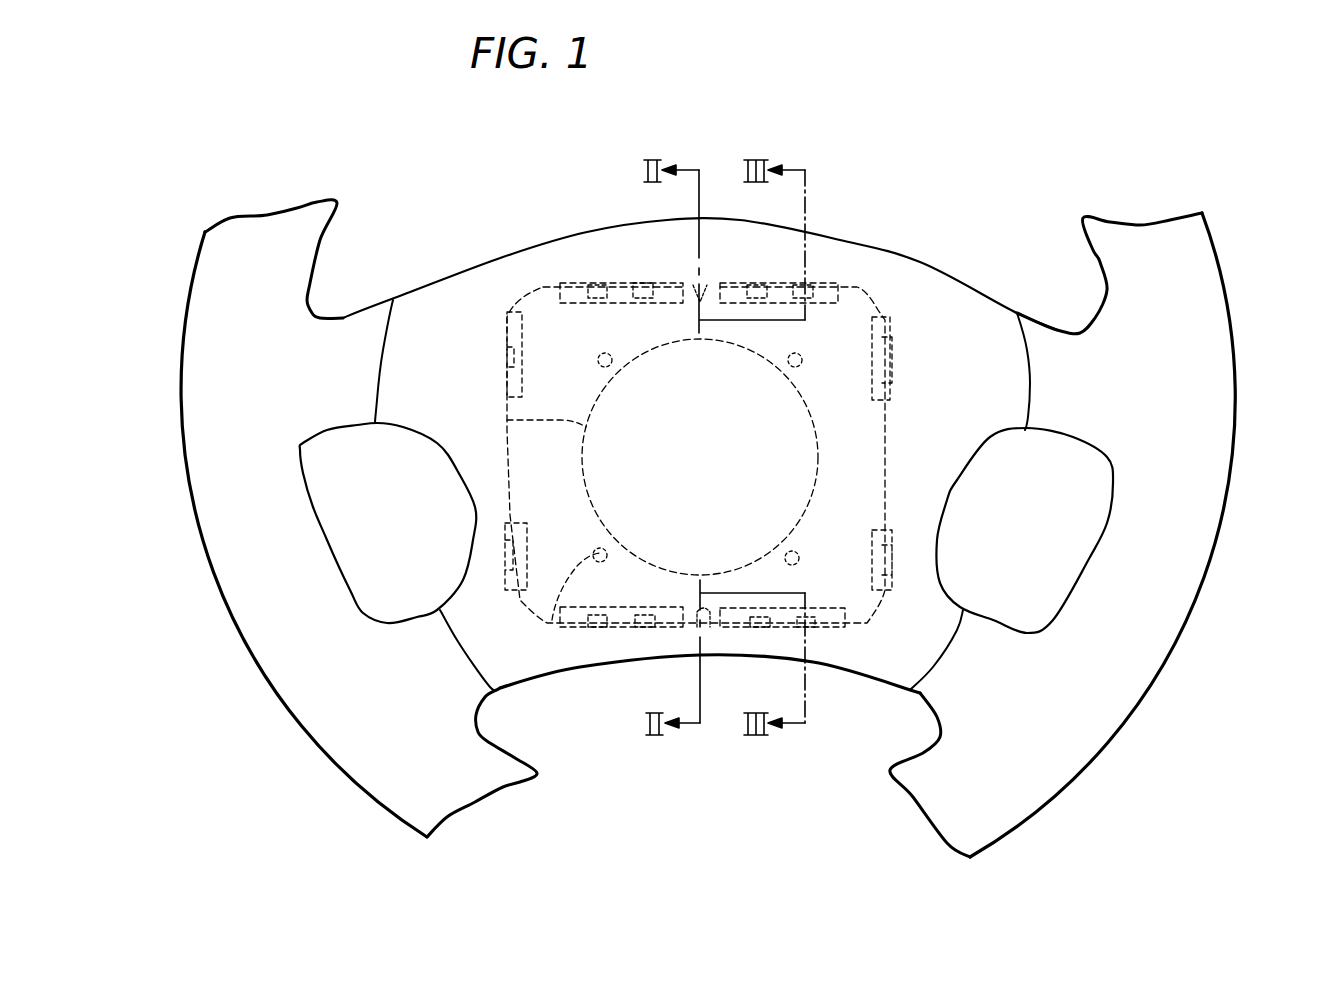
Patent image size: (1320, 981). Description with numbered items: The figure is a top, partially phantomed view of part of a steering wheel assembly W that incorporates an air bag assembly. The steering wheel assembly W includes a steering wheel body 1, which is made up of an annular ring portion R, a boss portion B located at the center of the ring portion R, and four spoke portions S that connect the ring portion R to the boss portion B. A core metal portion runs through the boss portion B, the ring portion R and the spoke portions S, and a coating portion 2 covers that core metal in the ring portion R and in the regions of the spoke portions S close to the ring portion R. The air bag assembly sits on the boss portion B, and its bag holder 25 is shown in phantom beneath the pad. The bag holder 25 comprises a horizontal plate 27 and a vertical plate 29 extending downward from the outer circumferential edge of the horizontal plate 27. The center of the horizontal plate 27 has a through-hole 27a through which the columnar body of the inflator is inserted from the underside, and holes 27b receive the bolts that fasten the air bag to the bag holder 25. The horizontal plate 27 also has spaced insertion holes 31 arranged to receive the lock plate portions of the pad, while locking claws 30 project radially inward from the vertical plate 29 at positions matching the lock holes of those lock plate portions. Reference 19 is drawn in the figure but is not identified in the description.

The steering wheel body 1 is at (283, 658).
The coating portion 2 is at (202, 470).
The pad cover 19 is at (540, 320).
The bag holder 25 is at (894, 440).
The horizontal plate 27 is at (857, 323).
The through-hole 27a is at (507, 420).
The holes 27b is at (552, 620).
The vertical plate 29 is at (572, 283).
The locking claws 30 is at (643, 280).
The insertion holes 31 is at (617, 280).
The boss portion B is at (906, 256).
The steering wheel assembly W is at (1236, 258).
The ring portion R is at (1093, 747).
The spoke portions S is at (365, 302).